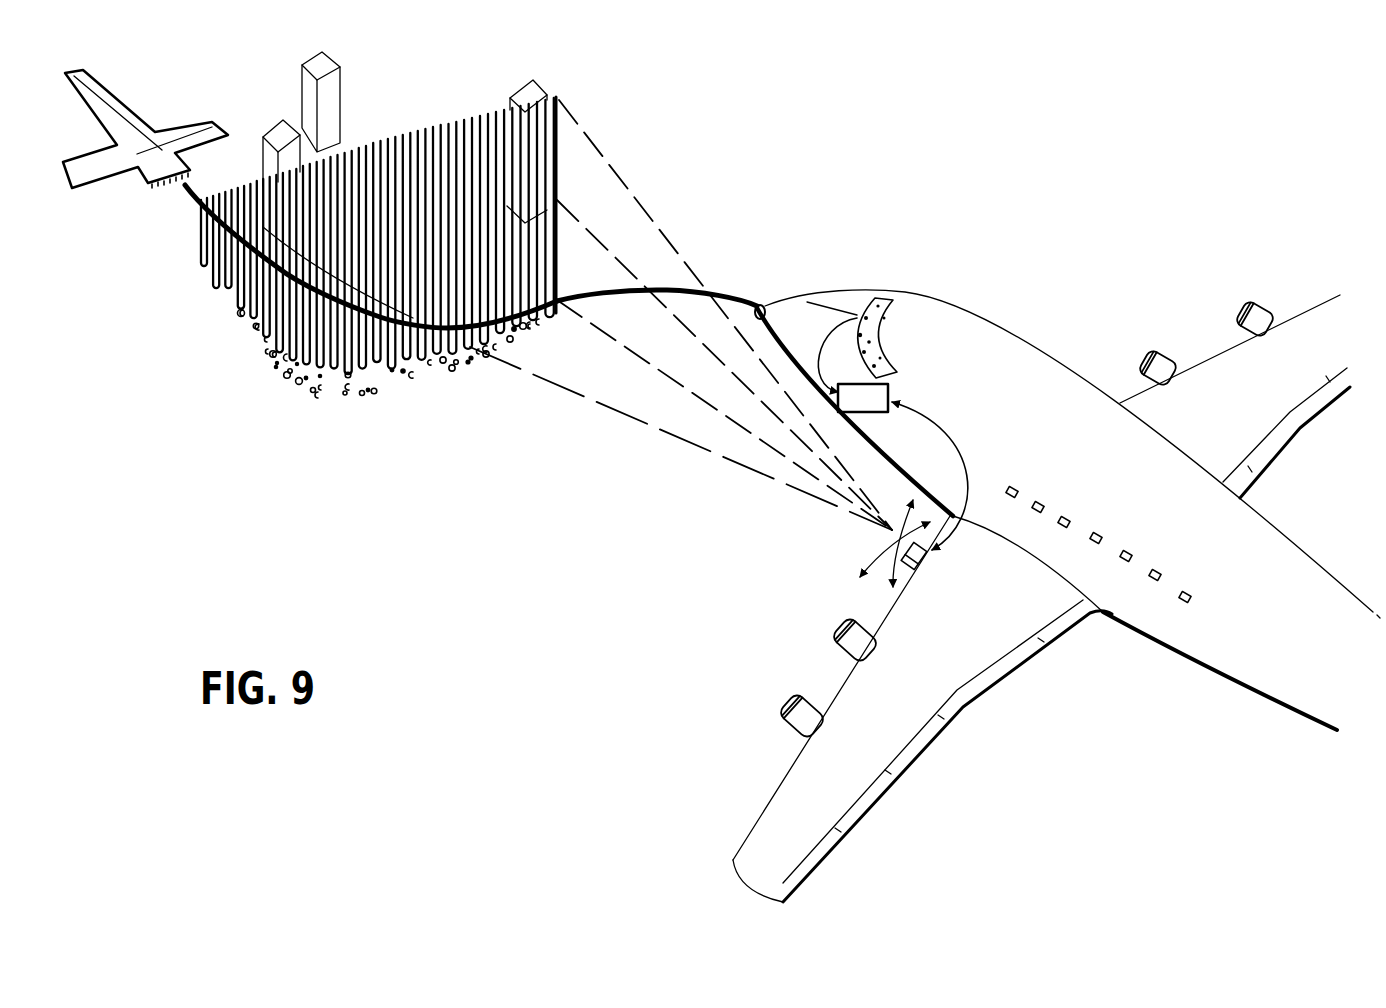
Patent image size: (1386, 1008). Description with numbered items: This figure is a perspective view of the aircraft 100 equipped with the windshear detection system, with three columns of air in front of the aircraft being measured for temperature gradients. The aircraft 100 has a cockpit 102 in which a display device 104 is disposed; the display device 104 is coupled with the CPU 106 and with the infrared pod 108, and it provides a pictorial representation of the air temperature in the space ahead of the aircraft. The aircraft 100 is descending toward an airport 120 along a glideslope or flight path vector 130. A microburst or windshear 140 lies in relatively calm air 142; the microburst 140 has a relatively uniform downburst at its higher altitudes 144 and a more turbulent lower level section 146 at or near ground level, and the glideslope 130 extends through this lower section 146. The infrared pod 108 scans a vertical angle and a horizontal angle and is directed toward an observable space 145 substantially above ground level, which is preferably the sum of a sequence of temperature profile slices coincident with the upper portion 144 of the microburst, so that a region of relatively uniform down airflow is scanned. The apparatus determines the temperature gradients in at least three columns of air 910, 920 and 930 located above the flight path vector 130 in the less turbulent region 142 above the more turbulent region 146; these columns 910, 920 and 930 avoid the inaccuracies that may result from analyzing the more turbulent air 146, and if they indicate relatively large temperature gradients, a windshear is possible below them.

The aircraft 100 is at (1056, 556).
The cockpit 102 is at (930, 302).
The display device 104 is at (884, 297).
The CPU 106 is at (870, 414).
The infrared pod 108 is at (922, 572).
The airport 120 is at (133, 120).
The glideslope 130 is at (737, 298).
The microburst 140 is at (190, 390).
The relatively calm air 142 is at (194, 212).
The higher altitudes of microburst 144 is at (642, 262).
The observable space 145 is at (674, 182).
The lower level section 146 is at (466, 358).
The column of air 910 is at (277, 132).
The column of air 920 is at (328, 64).
The column of air 930 is at (512, 92).